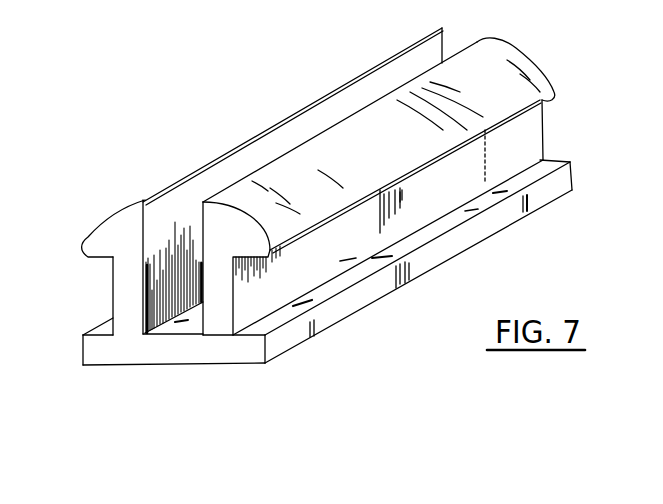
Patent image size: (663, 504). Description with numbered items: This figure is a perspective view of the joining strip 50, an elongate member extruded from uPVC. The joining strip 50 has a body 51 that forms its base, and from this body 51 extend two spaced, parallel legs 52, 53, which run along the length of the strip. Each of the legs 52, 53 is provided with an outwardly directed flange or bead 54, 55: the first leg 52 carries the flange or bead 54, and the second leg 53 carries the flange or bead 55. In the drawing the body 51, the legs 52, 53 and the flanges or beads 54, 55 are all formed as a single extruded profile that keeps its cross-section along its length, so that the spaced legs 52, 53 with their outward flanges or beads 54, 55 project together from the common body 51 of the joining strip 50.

The joining strip 50 is at (122, 186).
The body 51 is at (265, 364).
The leg 52 is at (113, 294).
The leg 53 is at (217, 305).
The flange or bead 54 is at (88, 237).
The flange or bead 55 is at (317, 221).